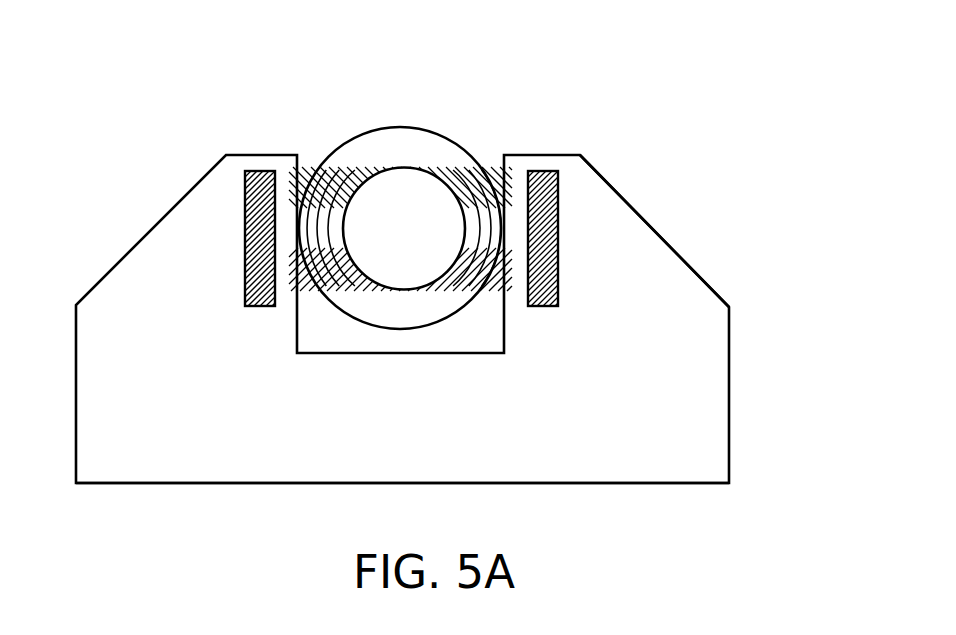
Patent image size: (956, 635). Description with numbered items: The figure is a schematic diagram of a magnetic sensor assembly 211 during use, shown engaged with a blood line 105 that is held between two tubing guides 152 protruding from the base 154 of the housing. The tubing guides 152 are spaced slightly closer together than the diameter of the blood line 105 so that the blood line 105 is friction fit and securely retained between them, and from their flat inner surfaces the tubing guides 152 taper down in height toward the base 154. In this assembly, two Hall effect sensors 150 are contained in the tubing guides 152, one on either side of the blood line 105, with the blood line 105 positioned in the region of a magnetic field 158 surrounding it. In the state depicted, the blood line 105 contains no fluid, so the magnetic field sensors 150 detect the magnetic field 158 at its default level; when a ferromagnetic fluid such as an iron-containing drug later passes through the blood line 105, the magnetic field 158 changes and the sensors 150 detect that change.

The blood line 105 is at (458, 140).
The Hall effect sensor 150 is at (245, 225).
The tubing guide 152 is at (678, 253).
The base 154 is at (712, 467).
The magnetic field 158 is at (310, 170).
The magnetic sensor assembly 211 is at (752, 277).